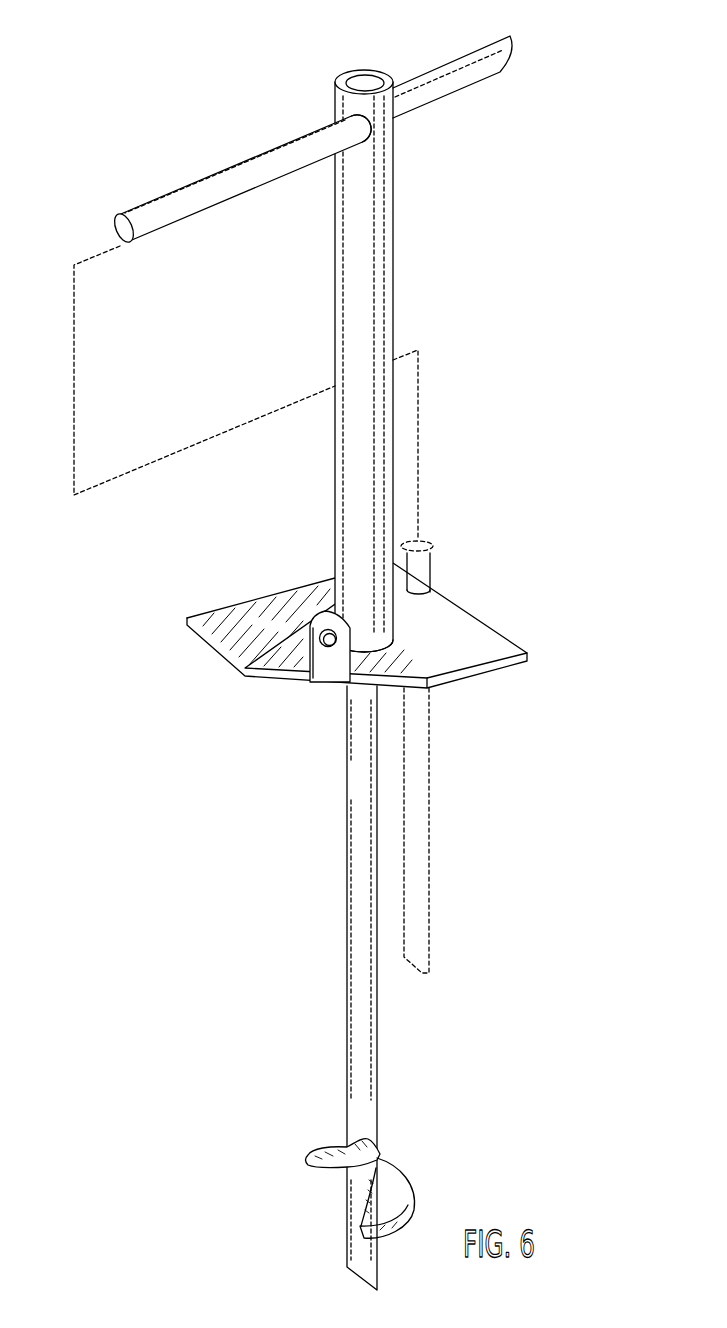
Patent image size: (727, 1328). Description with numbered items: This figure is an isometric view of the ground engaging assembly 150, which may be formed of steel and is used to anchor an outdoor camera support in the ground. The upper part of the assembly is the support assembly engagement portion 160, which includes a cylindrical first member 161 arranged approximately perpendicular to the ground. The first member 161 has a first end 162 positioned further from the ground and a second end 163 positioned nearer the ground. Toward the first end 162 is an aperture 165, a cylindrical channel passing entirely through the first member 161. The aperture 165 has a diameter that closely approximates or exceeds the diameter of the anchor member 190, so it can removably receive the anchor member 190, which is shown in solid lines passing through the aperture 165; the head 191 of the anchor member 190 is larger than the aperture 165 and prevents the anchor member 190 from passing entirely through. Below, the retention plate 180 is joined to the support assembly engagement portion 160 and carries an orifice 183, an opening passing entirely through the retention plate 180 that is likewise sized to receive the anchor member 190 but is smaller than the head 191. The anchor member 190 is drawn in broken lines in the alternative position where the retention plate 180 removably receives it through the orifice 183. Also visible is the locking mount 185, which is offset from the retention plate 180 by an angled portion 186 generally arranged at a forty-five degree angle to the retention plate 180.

The ground engaging assembly 150 is at (575, 393).
The support assembly engagement portion 160 is at (377, 330).
The first member 161 is at (373, 453).
The first end 162 is at (387, 76).
The second end 163 is at (393, 650).
The aperture 165 is at (367, 123).
The retention plate 180 is at (242, 642).
The orifice 183 is at (420, 582).
The locking mount 185 is at (316, 643).
The angled portion 186 is at (331, 676).
The anchor member 190 is at (240, 160).
The head 191 is at (122, 247).